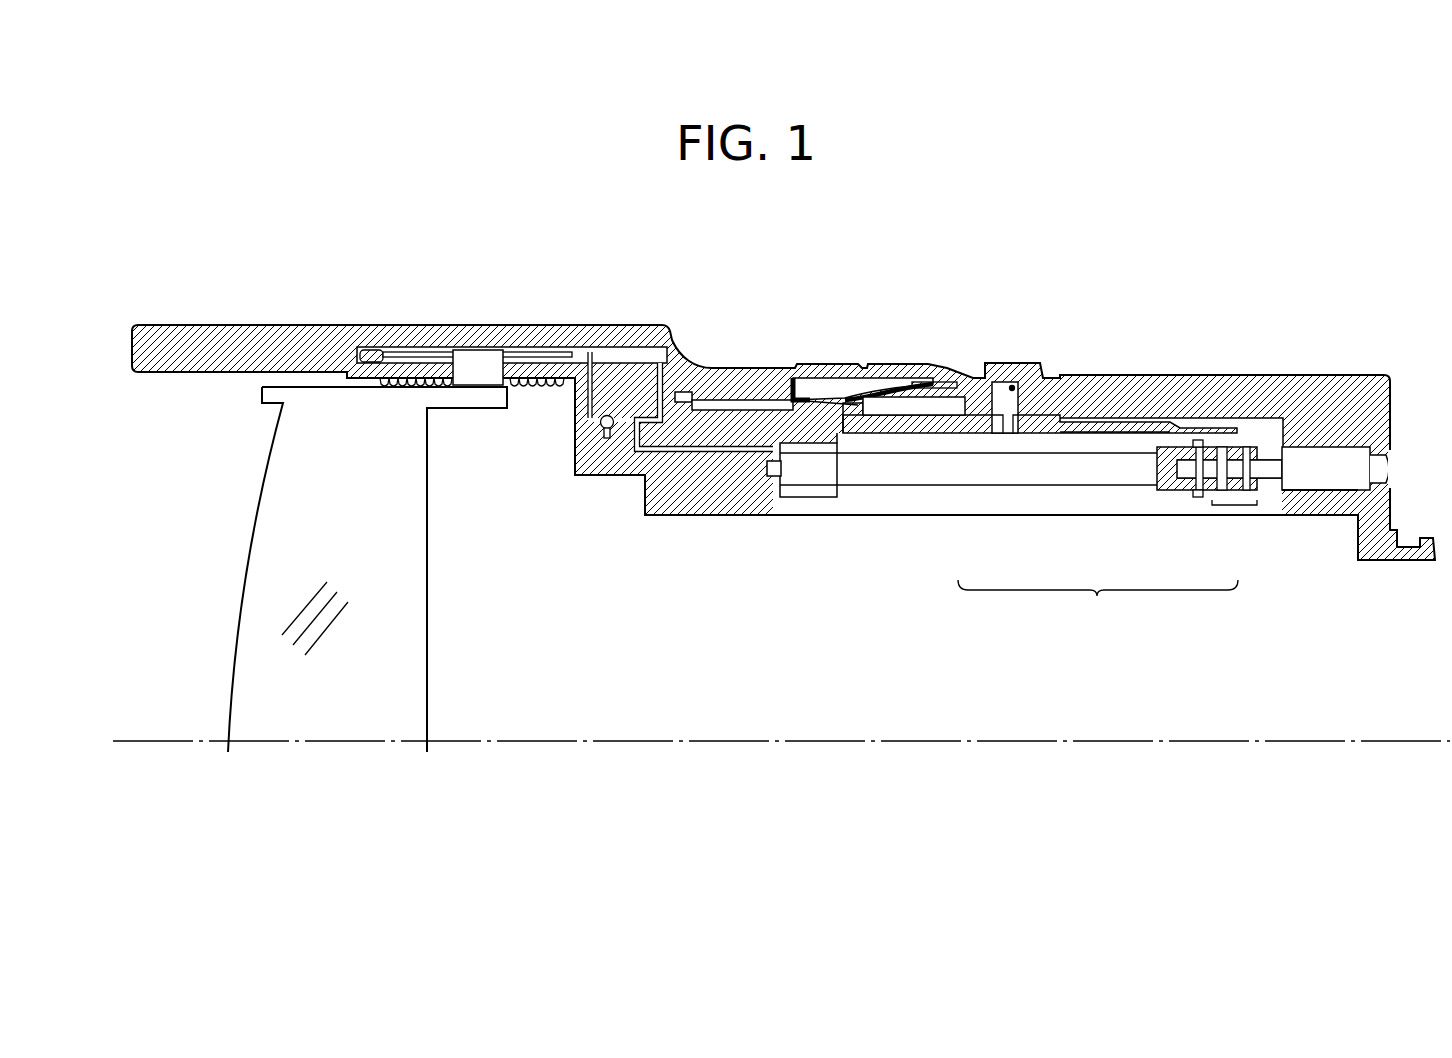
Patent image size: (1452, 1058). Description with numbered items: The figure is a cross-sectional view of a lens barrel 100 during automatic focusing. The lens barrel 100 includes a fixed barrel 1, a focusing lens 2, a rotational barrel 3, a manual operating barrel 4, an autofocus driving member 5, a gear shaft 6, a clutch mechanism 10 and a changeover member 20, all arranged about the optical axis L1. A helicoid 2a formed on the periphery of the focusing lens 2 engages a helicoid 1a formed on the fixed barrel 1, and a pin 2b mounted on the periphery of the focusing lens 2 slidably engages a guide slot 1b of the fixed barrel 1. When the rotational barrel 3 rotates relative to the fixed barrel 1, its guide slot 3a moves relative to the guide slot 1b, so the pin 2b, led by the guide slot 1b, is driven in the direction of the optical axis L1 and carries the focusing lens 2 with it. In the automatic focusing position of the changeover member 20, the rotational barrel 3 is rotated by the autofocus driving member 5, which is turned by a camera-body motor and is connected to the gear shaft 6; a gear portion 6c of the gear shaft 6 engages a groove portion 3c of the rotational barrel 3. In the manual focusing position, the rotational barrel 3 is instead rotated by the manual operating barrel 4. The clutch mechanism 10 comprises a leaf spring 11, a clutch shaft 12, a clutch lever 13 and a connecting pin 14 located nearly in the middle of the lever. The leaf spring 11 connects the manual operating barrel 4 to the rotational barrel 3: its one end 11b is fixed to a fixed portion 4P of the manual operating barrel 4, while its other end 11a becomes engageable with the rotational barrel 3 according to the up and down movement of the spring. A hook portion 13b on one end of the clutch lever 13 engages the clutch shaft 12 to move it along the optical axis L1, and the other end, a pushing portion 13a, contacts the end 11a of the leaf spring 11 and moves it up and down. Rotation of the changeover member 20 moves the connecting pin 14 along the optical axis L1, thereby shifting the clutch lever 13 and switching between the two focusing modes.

The lens barrel 100 is at (962, 224).
The fixed barrel 1 is at (1215, 372).
The helicoid 1a is at (355, 376).
The guide slot 1b is at (497, 388).
The focusing lens 2 is at (250, 532).
The helicoid 2a is at (437, 388).
The pin 2b is at (475, 356).
The rotational barrel 3 is at (620, 360).
The guide slot 3a is at (537, 356).
The groove portion 3c is at (792, 500).
The manual operating barrel 4 is at (733, 366).
The fixed portion 4P is at (913, 368).
The autofocus driving member 5 is at (1340, 455).
The gear shaft 6 is at (887, 486).
The gear portion 6c is at (797, 448).
The clutch mechanism 10 is at (1098, 608).
The leaf spring 11 is at (890, 396).
The end of leaf spring 11a is at (800, 365).
The end of leaf spring 11b is at (937, 370).
The clutch shaft 12 is at (1227, 500).
The clutch lever 13 is at (1093, 428).
The pushing portion 13a is at (853, 434).
The hook portion 13b is at (1240, 427).
The connecting pin 14 is at (1014, 392).
The changeover member 20 is at (1023, 358).
The optical axis L1 is at (818, 745).